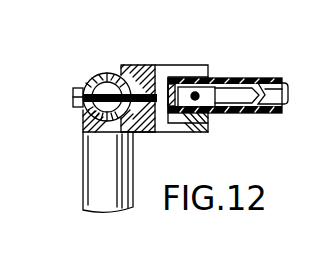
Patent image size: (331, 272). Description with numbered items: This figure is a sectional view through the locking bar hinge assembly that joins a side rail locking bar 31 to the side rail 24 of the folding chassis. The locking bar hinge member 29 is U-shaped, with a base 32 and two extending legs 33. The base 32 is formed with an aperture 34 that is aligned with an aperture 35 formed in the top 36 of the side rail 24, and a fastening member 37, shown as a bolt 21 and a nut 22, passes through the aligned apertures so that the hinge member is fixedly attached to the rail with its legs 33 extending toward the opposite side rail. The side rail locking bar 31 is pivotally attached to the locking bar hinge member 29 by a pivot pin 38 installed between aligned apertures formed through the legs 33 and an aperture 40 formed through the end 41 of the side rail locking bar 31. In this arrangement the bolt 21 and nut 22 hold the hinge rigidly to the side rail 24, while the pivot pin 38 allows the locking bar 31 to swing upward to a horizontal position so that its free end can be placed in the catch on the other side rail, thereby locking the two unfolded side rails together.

The bolt 21 is at (73, 89).
The nut 22 is at (148, 78).
The side rail 24 is at (107, 198).
The locking bar hinge member 29 is at (165, 70).
The side rail locking bar 31 is at (267, 78).
The base 32 is at (140, 72).
The legs 33 is at (195, 76).
The aperture 34 is at (137, 133).
The aperture 35 is at (107, 73).
The top 36 is at (87, 130).
The fastening member 37 is at (72, 97).
The pivot pin 38 is at (220, 113).
The aperture 40 is at (226, 63).
The end 41 is at (198, 128).